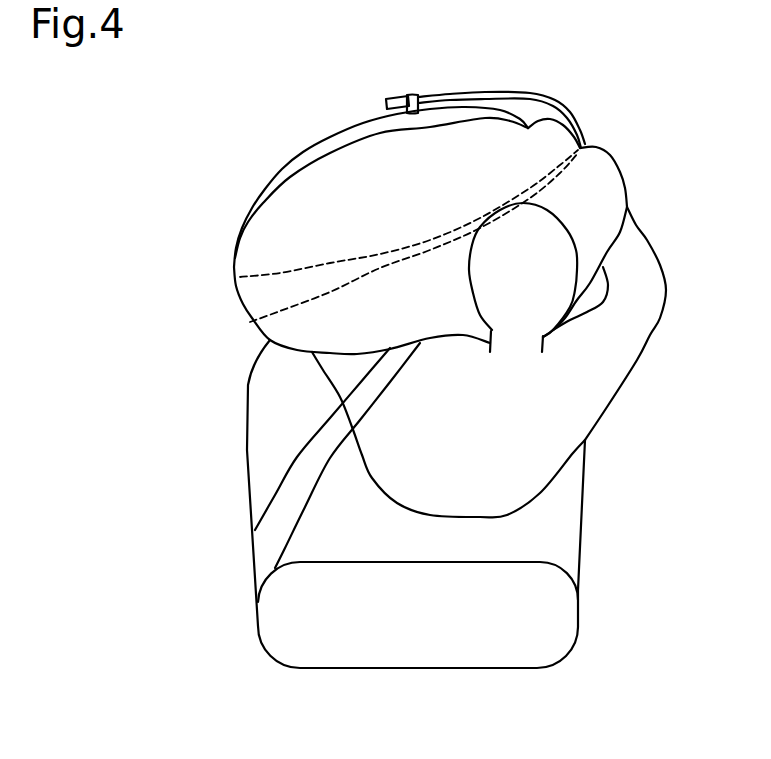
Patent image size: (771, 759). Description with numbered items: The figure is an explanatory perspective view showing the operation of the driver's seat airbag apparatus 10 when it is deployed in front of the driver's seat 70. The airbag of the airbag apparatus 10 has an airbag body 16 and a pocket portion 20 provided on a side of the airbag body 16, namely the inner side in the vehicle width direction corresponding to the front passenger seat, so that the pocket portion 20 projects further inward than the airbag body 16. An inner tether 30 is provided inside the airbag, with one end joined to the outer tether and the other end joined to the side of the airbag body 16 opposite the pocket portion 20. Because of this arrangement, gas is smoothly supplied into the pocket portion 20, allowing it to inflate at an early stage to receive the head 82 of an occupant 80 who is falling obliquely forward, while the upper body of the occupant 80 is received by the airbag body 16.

The driver's seat airbag apparatus 10 is at (190, 217).
The airbag body 16 is at (268, 222).
The pocket portion 20 is at (620, 172).
The inner tether 30 is at (252, 293).
The driver's seat 70 is at (252, 448).
The occupant 80 is at (590, 397).
The head 82 is at (558, 248).